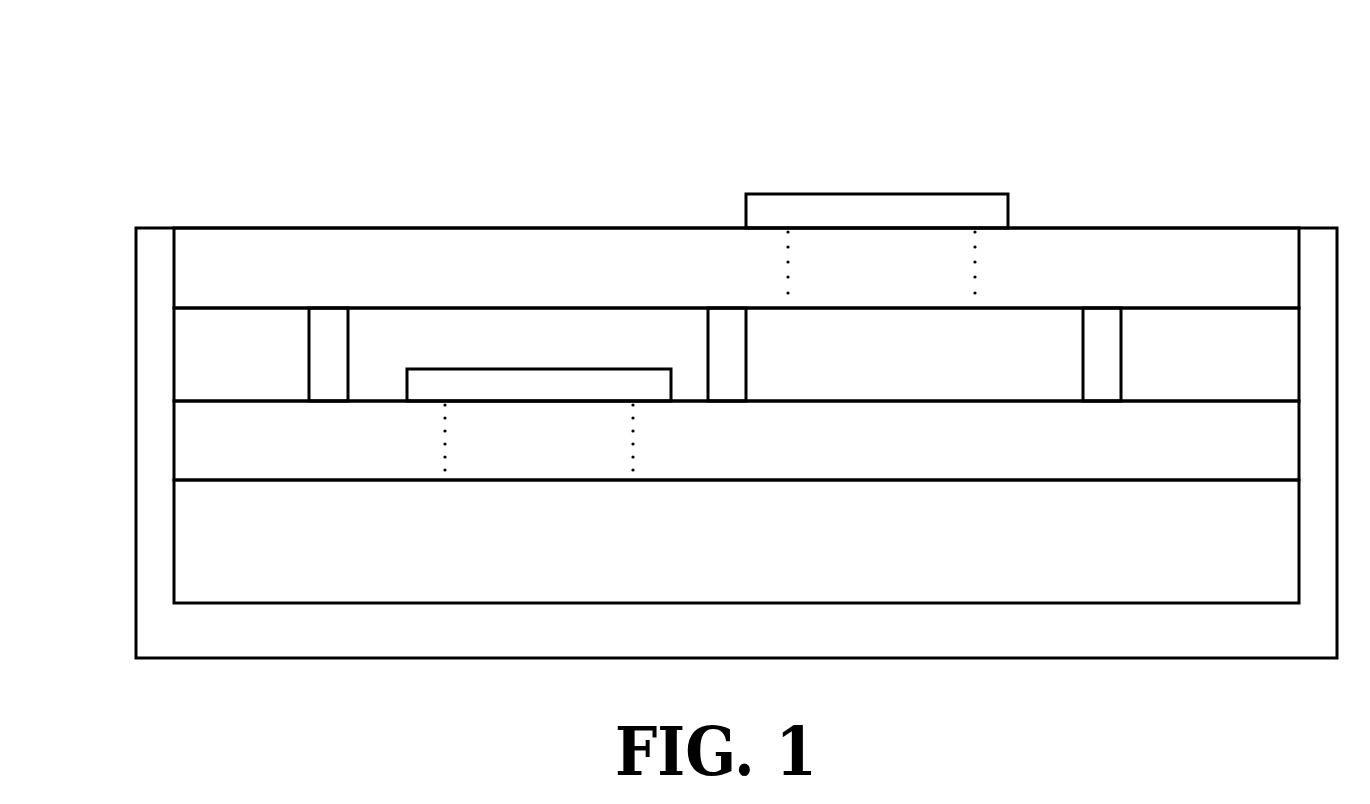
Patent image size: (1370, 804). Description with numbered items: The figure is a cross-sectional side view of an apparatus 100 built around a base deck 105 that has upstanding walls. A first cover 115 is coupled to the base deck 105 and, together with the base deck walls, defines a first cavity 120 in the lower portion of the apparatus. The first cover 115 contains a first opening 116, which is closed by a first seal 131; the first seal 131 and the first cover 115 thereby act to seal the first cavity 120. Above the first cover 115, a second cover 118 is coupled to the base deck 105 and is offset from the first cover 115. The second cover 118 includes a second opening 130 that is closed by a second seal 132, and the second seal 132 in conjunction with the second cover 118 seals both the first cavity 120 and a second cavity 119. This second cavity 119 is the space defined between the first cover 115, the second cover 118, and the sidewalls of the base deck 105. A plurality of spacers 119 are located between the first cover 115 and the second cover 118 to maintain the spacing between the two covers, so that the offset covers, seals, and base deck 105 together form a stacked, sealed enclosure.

The apparatus 100 is at (1272, 76).
The base deck 105 is at (736, 443).
The first cover 115 is at (736, 440).
The first opening 116 is at (538, 437).
The second cover 118 is at (736, 268).
The second cavity / spacers 119 is at (1102, 340).
The first cavity 120 is at (736, 541).
The second opening 130 is at (881, 262).
The first seal 131 is at (539, 385).
The second seal 132 is at (877, 211).